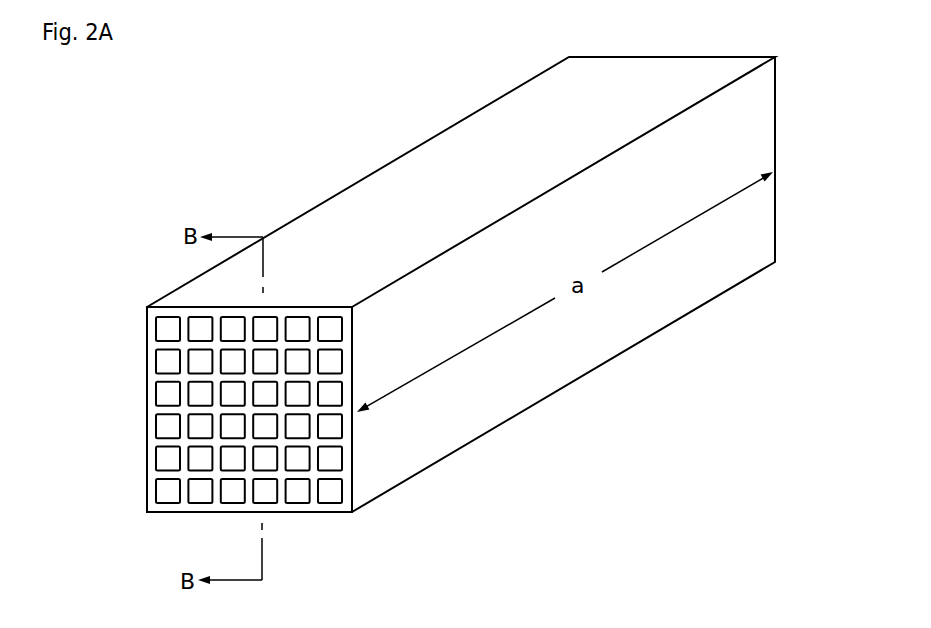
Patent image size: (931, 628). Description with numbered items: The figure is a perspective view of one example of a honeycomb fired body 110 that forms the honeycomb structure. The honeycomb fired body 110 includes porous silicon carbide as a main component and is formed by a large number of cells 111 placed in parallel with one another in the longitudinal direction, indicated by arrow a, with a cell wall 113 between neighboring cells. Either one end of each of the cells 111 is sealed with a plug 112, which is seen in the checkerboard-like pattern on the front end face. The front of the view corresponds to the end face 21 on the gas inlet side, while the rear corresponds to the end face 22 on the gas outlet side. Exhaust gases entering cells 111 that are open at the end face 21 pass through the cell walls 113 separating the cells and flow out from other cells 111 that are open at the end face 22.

The honeycomb fired body 110 is at (317, 166).
The cell 111 is at (167, 497).
The plug 112 is at (165, 331).
The cell wall 113 is at (297, 480).
The end face on the gas inlet side 21 is at (157, 442).
The end face on the gas outlet side 22 is at (775, 210).